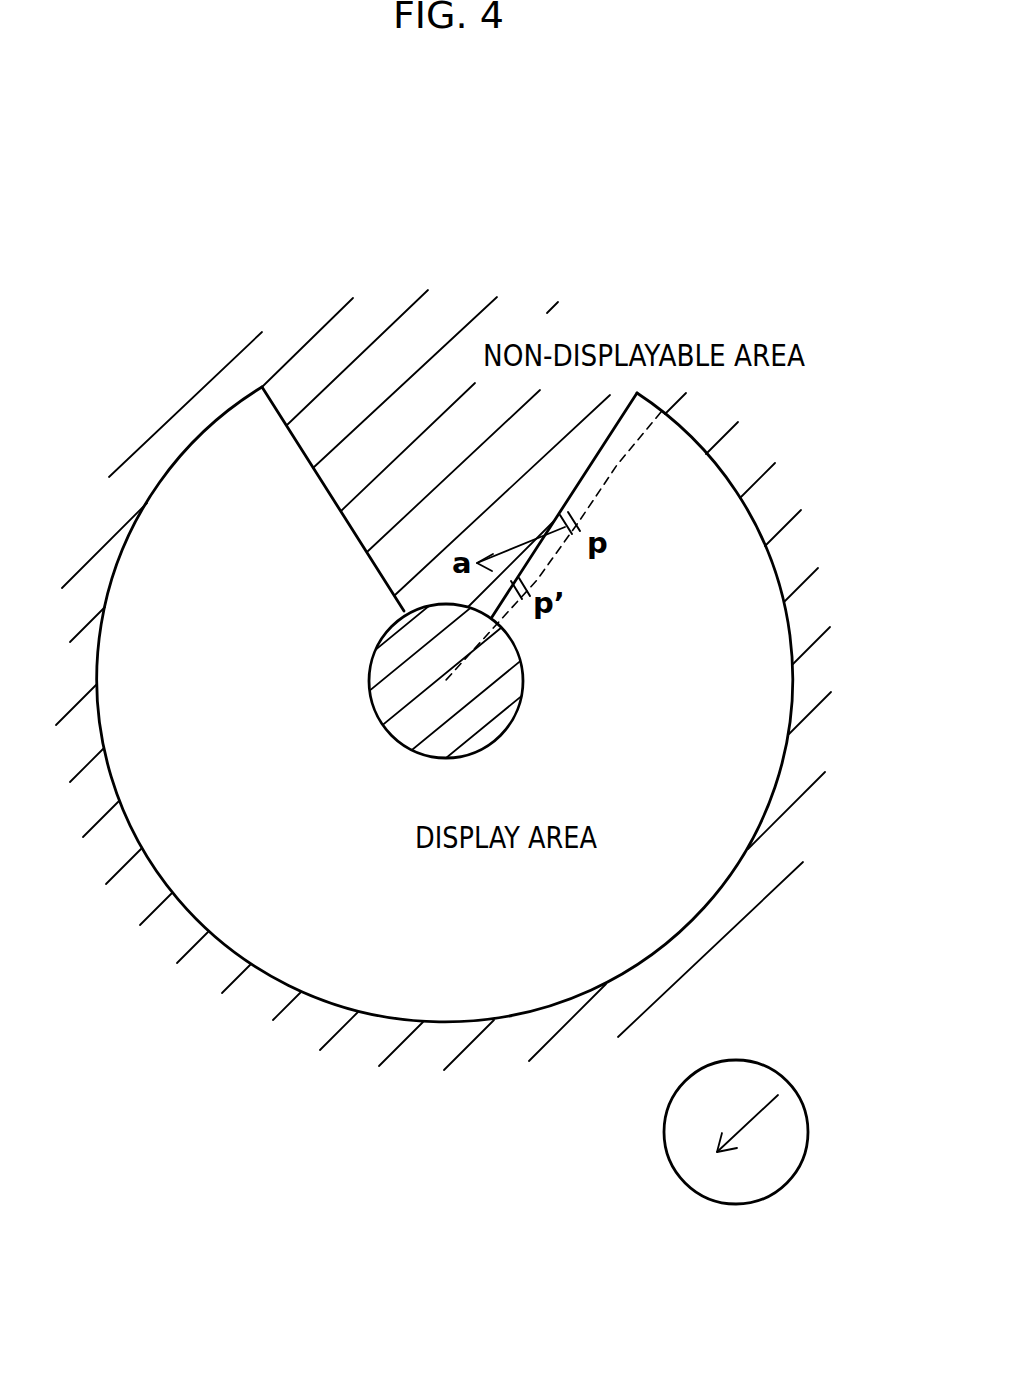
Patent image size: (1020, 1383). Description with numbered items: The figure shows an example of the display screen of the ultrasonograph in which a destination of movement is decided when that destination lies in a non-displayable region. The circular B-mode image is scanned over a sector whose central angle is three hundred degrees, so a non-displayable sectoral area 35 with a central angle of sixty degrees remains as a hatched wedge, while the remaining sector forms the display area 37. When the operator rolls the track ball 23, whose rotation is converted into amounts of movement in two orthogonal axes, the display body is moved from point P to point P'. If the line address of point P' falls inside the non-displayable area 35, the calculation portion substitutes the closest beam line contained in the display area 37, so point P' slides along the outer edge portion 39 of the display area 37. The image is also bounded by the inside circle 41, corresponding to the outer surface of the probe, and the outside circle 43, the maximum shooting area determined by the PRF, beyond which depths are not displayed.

The track ball 23 is at (667, 1140).
The non-displayable sectoral area 35 is at (365, 518).
The display area 37 is at (760, 707).
The outer edge portion 39 is at (598, 458).
The inside circle 41 is at (513, 713).
The outside circle 43 is at (560, 1005).